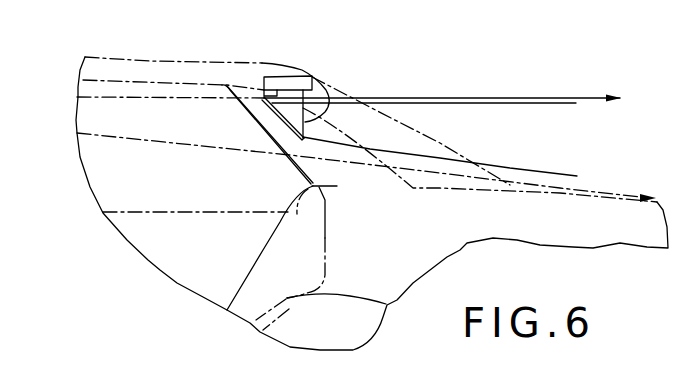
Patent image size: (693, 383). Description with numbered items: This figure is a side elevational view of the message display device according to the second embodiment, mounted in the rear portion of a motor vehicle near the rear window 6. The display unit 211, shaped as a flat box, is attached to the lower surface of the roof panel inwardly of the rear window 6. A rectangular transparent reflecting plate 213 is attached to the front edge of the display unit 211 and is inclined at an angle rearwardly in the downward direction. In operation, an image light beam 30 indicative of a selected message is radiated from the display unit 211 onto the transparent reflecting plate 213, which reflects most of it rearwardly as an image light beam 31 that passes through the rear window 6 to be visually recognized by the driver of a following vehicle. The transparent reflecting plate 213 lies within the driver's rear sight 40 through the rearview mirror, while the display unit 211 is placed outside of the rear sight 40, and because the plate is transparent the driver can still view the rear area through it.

The display unit 211 is at (287, 77).
The transparent reflecting plate 213 is at (275, 112).
The image light beam 30 is at (327, 103).
The rear window 6 is at (398, 120).
The rear sight 40 is at (480, 97).
The image light beam 31 is at (532, 102).